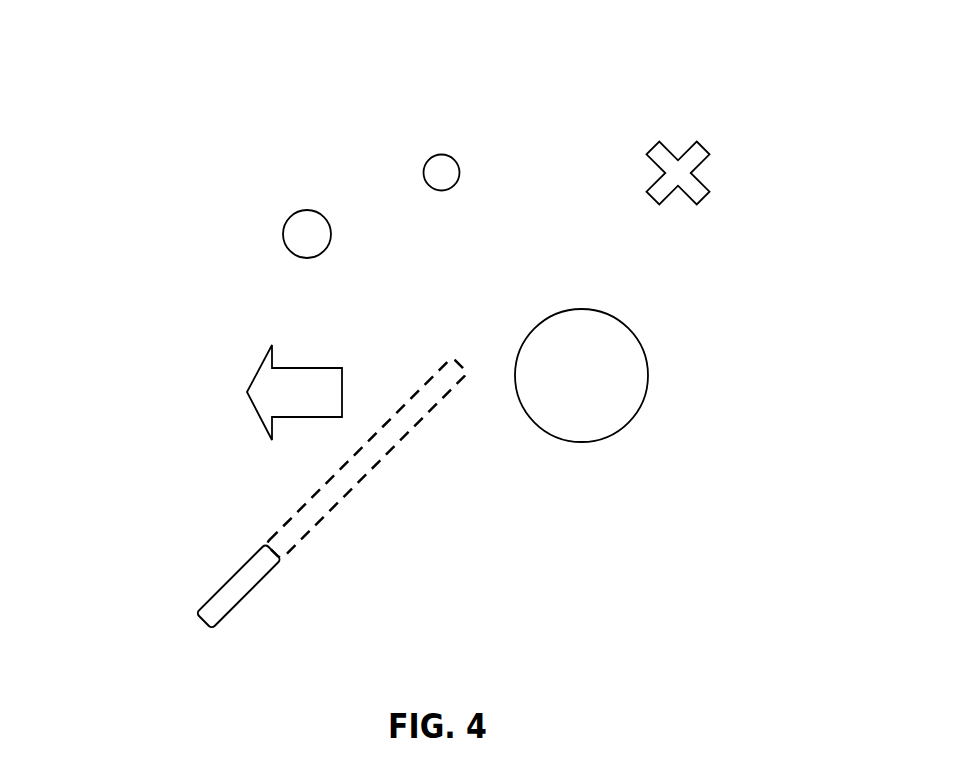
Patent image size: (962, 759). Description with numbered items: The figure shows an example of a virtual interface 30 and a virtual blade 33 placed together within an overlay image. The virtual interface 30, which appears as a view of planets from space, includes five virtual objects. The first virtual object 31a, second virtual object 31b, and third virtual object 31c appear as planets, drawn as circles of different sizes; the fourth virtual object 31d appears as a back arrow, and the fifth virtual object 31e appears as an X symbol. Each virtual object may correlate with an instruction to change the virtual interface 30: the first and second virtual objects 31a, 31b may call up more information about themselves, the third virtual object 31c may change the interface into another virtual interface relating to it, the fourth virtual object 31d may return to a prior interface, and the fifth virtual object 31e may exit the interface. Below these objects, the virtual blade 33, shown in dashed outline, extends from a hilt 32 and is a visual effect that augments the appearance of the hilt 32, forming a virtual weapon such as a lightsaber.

The virtual interface 30 is at (222, 73).
The first virtual object 31a is at (308, 236).
The second virtual object 31b is at (498, 103).
The third virtual object 31c is at (706, 308).
The fourth virtual object 31d is at (297, 388).
The fifth virtual object 31e is at (765, 132).
The hilt 32 is at (210, 618).
The virtual blade 33 is at (308, 498).